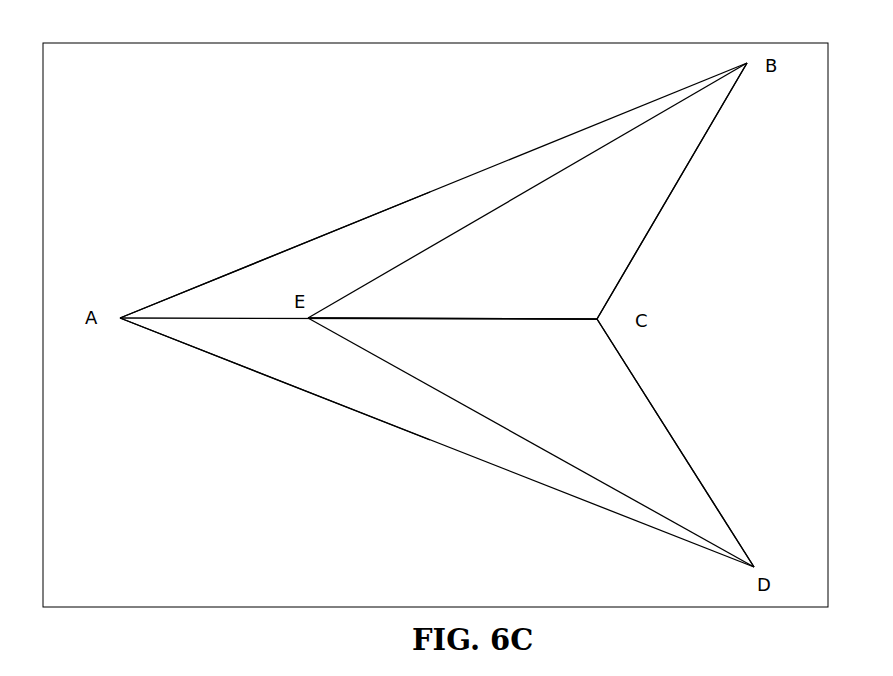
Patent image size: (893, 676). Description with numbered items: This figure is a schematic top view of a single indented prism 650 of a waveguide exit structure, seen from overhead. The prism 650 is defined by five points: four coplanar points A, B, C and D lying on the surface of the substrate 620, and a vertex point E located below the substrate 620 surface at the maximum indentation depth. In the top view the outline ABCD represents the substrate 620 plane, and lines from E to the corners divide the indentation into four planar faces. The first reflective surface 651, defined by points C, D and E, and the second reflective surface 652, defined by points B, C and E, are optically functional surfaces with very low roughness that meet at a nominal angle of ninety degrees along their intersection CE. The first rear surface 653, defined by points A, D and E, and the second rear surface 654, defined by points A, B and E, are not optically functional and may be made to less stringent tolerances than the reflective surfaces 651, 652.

The substrate 620 is at (134, 93).
The indented prism 650 is at (316, 199).
The first reflective surface 651 is at (550, 366).
The second reflective surface 652 is at (550, 283).
The first rear surface 653 is at (336, 370).
The second rear surface 654 is at (325, 281).